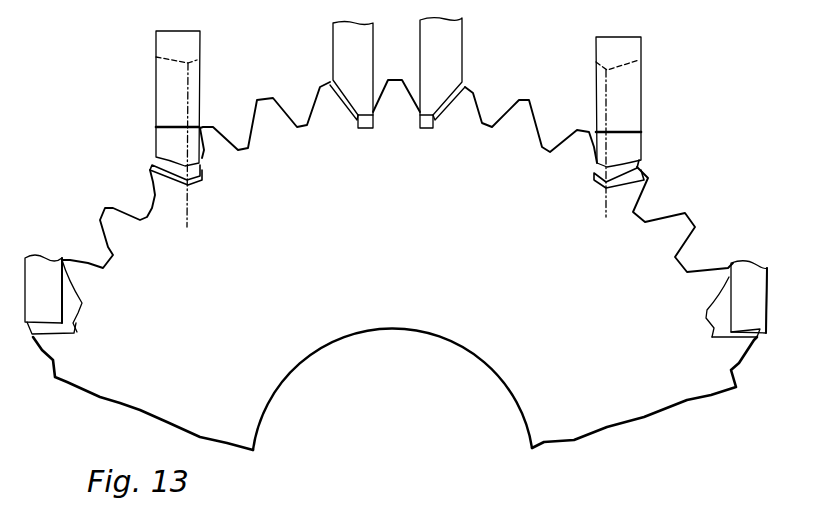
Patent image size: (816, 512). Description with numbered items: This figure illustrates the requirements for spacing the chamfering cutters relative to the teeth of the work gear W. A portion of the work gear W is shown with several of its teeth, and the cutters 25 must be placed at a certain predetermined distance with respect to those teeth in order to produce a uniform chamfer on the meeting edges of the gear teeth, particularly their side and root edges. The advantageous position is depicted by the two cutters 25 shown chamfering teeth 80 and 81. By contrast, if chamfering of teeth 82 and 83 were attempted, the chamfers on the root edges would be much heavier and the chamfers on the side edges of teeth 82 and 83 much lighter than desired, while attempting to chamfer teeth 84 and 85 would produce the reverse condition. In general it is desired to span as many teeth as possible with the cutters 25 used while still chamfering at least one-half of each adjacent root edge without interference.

The cutter 25 is at (199, 80).
The tooth 80 is at (167, 190).
The tooth 81 is at (630, 193).
The tooth 82 is at (334, 113).
The tooth 83 is at (462, 112).
The tooth 84 is at (55, 342).
The tooth 85 is at (737, 347).
The work gear W is at (509, 358).